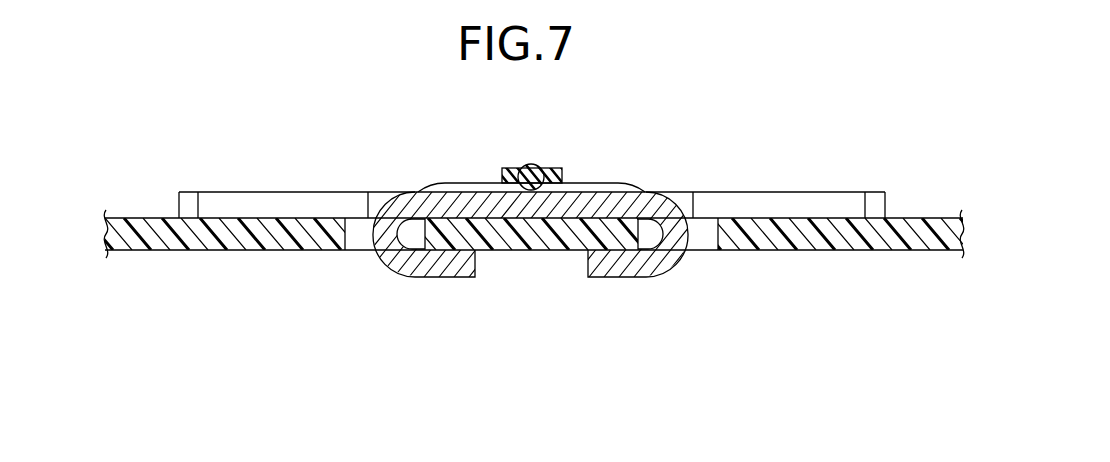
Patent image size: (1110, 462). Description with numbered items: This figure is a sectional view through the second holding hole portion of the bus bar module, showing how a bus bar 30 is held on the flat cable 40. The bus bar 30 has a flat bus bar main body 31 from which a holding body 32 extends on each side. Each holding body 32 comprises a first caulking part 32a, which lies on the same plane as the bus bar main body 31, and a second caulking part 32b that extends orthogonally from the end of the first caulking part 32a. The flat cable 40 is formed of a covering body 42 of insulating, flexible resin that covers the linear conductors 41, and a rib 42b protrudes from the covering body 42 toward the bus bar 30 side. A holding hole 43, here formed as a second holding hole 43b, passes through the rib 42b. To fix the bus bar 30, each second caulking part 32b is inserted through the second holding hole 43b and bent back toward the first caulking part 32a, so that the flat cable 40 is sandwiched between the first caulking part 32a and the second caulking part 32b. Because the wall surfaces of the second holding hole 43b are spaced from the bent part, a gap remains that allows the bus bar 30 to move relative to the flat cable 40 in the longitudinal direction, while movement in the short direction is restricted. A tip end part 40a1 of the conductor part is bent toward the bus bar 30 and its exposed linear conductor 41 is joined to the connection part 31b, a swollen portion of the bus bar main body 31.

The bus bar 30 is at (532, 245).
The bus bar main body 31 is at (765, 191).
The connection part 31b is at (462, 183).
The holding body 32 is at (530, 297).
The first caulking part 32a is at (483, 203).
The second caulking part 32b is at (650, 356).
The flat cable 40 is at (534, 233).
The tip end part 40a1 is at (517, 168).
The linear conductor 41 is at (532, 163).
The covering body 42 is at (246, 169).
The rib 42b is at (143, 218).
The holding hole 43 is at (530, 295).
The second holding hole 43b is at (357, 237).